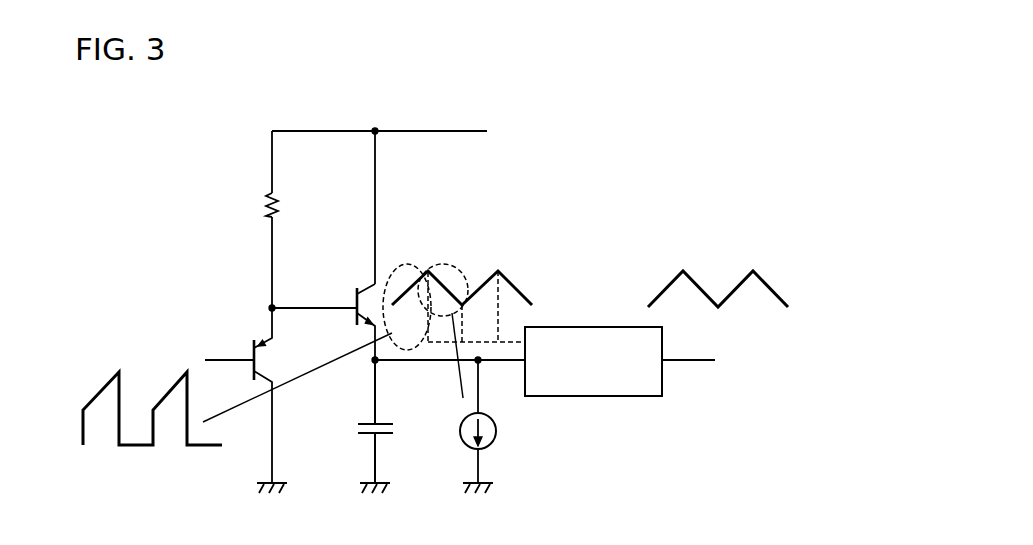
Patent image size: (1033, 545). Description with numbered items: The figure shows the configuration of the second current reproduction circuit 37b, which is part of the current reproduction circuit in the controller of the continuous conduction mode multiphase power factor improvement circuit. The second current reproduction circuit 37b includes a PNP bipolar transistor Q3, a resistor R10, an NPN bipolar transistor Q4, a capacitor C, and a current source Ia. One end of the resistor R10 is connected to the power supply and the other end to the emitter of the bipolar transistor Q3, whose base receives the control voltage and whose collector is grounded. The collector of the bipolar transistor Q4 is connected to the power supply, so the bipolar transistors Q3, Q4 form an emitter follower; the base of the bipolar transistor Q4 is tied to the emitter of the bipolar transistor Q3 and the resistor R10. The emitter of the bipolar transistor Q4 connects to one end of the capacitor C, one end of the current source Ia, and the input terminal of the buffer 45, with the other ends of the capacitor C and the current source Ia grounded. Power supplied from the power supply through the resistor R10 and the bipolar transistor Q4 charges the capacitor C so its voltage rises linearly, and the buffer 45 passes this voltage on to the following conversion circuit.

The second current reproduction circuit 37b is at (619, 85).
The buffer 45 is at (585, 327).
The resistor R10 is at (296, 206).
The PNP bipolar transistor Q3 is at (254, 395).
The NPN bipolar transistor Q4 is at (349, 322).
The capacitor C is at (367, 426).
The current source Ia is at (491, 426).